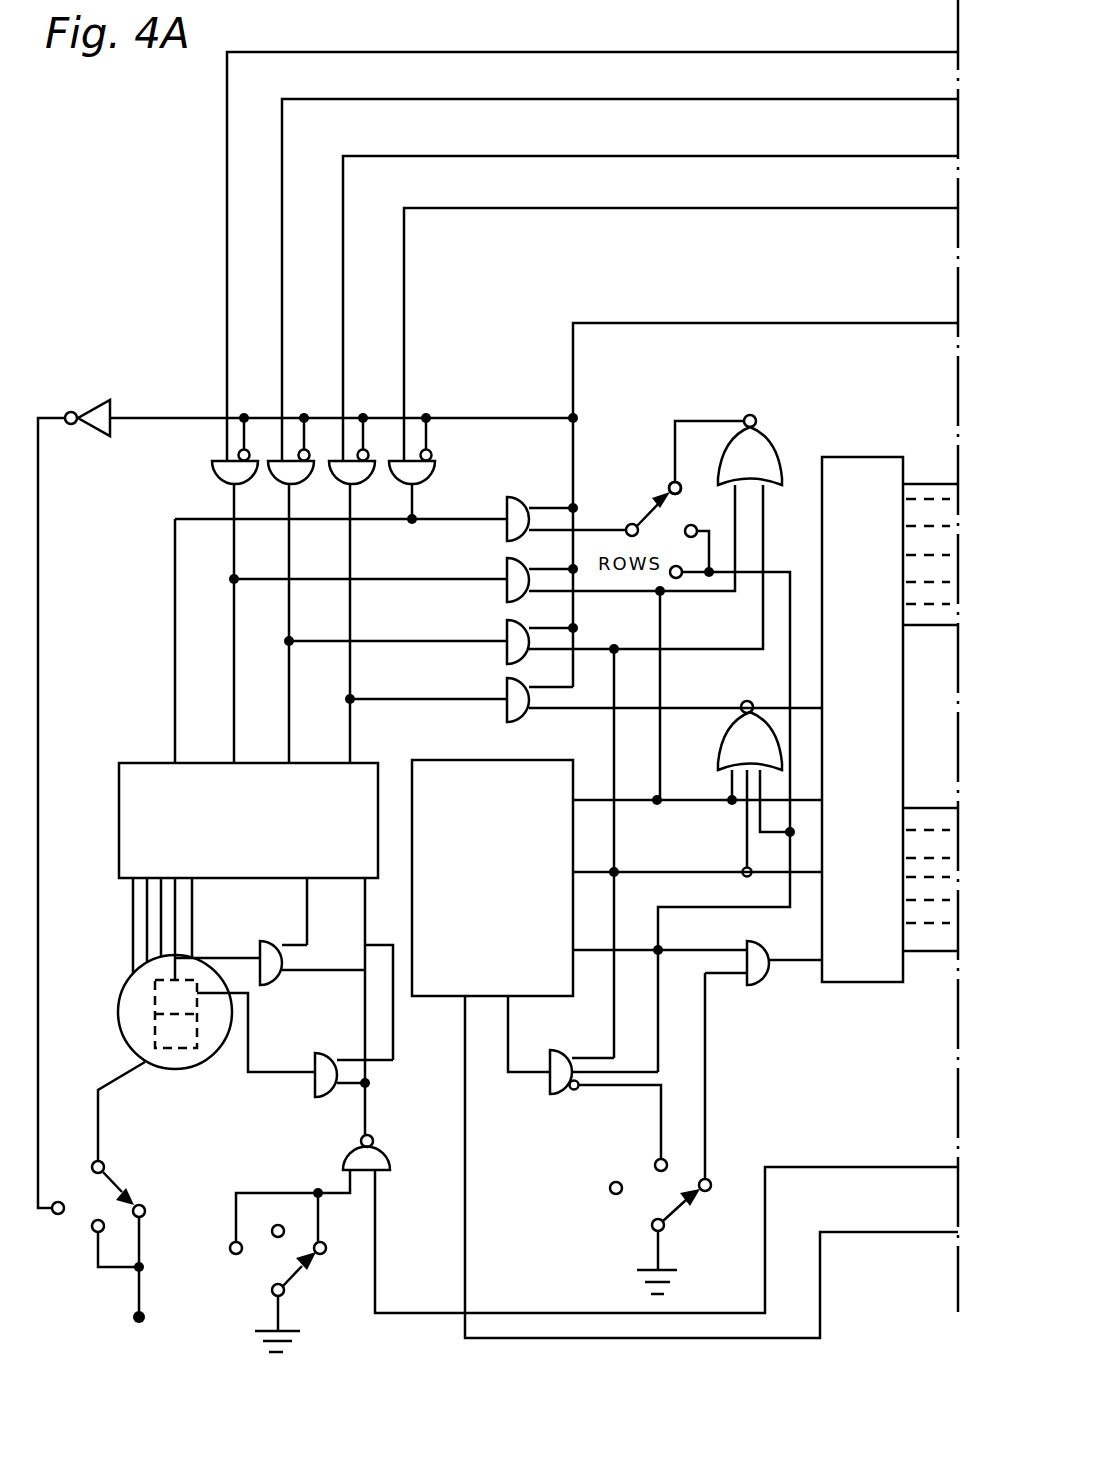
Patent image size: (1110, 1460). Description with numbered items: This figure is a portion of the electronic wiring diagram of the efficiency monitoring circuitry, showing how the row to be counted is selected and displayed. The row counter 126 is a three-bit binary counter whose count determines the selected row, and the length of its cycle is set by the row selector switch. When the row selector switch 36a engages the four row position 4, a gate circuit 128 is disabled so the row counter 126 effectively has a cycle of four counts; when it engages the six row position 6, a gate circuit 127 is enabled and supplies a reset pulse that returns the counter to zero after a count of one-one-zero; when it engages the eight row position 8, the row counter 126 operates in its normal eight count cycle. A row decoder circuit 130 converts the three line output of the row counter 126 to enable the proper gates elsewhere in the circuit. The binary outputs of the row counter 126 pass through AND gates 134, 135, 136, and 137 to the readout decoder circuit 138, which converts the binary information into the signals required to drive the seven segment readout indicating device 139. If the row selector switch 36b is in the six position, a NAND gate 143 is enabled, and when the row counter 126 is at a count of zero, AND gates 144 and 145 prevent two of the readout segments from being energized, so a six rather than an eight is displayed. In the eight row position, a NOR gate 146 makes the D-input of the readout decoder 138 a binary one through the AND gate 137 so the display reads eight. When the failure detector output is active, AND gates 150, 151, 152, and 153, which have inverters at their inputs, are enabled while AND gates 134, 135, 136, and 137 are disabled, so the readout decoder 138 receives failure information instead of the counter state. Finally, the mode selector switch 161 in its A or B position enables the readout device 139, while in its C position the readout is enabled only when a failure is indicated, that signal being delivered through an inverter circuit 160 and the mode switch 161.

The inverter circuit 160 is at (93, 402).
The AND gate 153 is at (213, 470).
The AND gate 152 is at (305, 488).
The AND gate 151 is at (367, 488).
The AND gate 150 is at (437, 474).
The AND gate 134 is at (509, 504).
The AND gate 135 is at (505, 574).
The AND gate 136 is at (505, 636).
The AND gate 137 is at (506, 692).
The readout decoder circuit 138 is at (402, 752).
The row counter 126 is at (520, 740).
The row decoder circuit 130 is at (858, 983).
The NOR gate 146 is at (722, 756).
The gate circuit 128 is at (757, 986).
The gate circuit 127 is at (552, 1094).
The seven segment readout indicating device 139 is at (121, 993).
The AND gate 145 is at (267, 986).
The AND gate 144 is at (318, 1097).
The NAND gate 143 is at (374, 1150).
The mode selector switch 161 is at (100, 1190).
The row selector switch 36a is at (680, 1208).
The row selector switch 36b is at (285, 1284).
The four row position 4 is at (660, 476).
The six row position 6 is at (698, 535).
The eight row position 8 is at (724, 806).